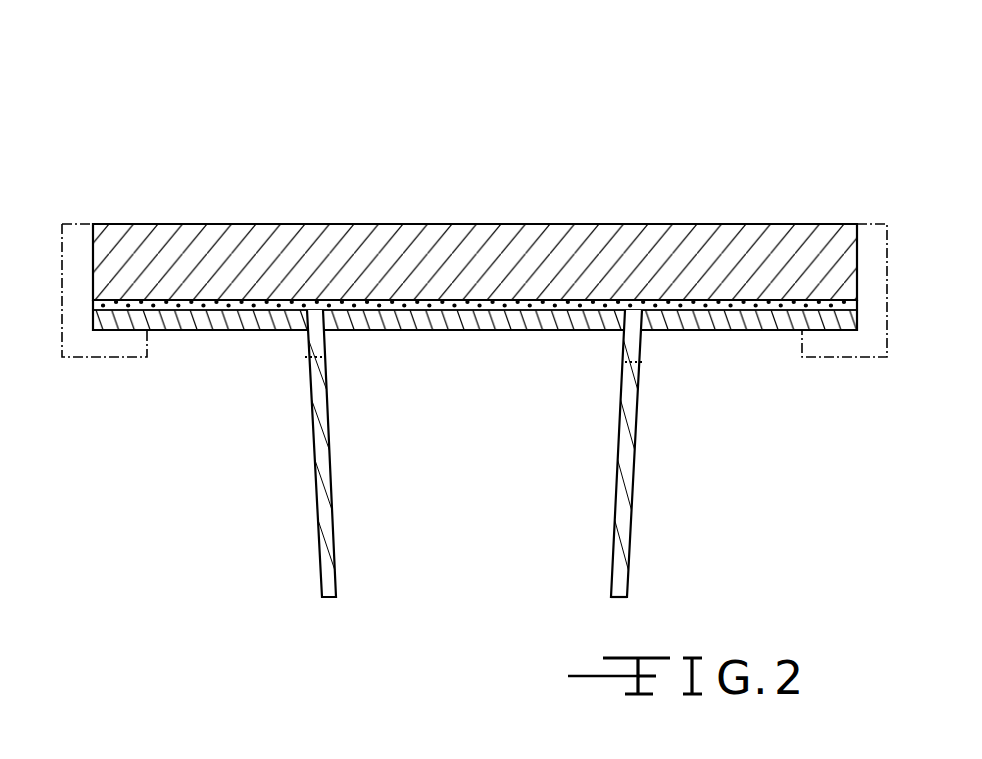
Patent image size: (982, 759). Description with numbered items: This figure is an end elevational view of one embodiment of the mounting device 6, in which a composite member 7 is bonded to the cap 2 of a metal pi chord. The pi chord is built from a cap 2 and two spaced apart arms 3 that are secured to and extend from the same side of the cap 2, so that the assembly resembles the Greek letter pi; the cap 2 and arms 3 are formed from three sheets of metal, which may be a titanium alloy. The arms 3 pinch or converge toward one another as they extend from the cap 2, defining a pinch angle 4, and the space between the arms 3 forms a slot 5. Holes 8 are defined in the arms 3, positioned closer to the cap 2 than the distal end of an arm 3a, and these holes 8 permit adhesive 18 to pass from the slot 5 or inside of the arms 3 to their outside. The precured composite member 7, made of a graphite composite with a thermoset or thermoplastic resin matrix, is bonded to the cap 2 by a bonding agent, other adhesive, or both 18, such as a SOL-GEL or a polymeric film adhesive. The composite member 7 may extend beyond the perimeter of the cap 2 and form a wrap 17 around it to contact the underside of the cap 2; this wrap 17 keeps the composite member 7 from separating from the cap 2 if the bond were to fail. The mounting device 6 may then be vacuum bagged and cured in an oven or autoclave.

The cap 2 is at (729, 338).
The spaced apart arms 3 is at (313, 497).
The distal end of an arm 3a is at (627, 580).
The pinch angle 4 is at (408, 333).
The slot 5 is at (453, 525).
The mounting device 6 is at (453, 117).
The composite member 7 is at (697, 222).
The holes 8 is at (305, 357).
The wrap 17 is at (58, 248).
The adhesive 18 is at (460, 300).